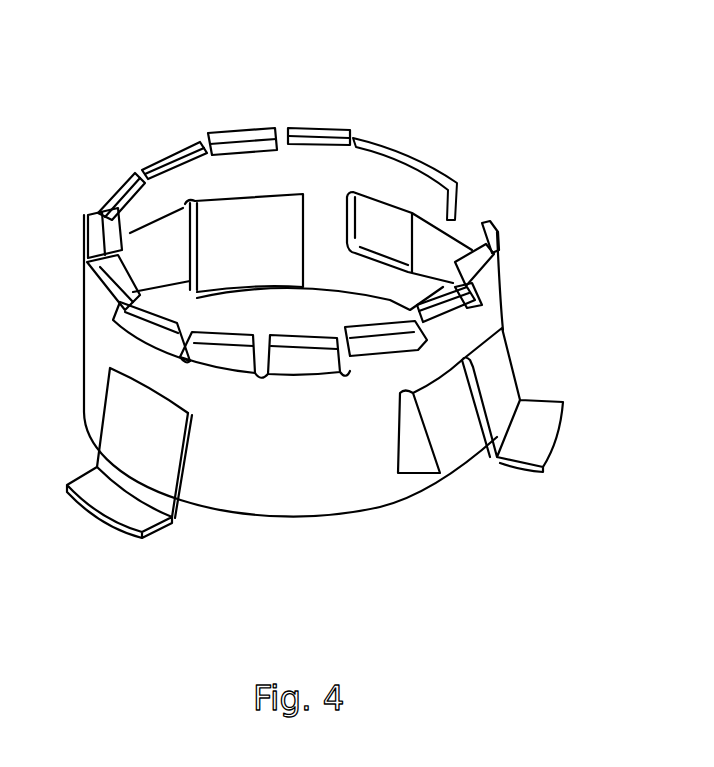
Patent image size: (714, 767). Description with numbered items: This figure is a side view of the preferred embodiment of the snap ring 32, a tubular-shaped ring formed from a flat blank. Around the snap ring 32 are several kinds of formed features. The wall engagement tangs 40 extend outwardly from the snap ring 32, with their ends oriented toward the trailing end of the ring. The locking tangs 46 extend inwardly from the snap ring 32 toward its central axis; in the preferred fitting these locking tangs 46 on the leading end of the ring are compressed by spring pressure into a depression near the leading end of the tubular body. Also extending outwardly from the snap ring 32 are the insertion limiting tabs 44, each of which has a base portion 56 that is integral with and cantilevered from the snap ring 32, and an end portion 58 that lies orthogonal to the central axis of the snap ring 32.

The snap ring 32 is at (465, 113).
The wall engagement tang 40 is at (462, 435).
The insertion limiting tab 44 is at (152, 463).
The locking tang 46 is at (243, 128).
The base portion 56 is at (187, 468).
The end portion 58 is at (102, 520).